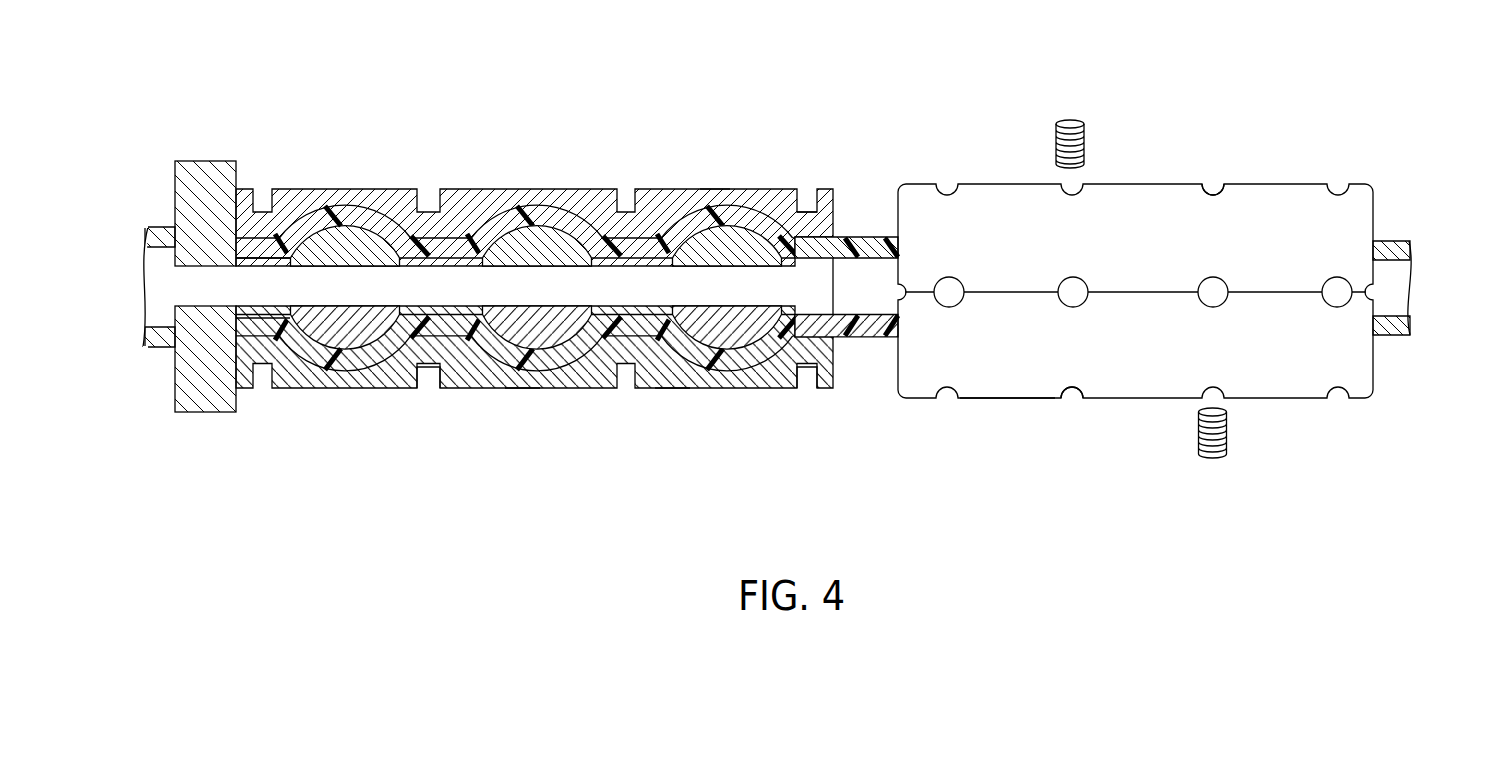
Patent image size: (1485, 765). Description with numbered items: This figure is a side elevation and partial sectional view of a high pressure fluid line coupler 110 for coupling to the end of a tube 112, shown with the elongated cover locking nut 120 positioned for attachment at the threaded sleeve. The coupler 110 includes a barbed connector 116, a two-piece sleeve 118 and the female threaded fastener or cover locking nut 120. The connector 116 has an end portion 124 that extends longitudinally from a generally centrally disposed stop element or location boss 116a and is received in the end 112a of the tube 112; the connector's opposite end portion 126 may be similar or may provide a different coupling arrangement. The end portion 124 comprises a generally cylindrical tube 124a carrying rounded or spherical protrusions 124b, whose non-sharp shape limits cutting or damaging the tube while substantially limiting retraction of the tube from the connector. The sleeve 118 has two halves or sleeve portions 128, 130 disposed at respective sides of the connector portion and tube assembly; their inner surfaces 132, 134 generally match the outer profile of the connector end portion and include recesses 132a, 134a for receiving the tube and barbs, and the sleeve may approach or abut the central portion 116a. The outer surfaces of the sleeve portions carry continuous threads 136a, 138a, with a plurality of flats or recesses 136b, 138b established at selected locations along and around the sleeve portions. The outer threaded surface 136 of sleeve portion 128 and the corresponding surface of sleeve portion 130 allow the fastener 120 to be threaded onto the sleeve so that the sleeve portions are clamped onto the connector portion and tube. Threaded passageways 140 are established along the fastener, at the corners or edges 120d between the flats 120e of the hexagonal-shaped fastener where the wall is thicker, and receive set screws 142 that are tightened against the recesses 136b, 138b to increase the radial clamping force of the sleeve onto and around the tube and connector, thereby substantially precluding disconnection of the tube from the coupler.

The high pressure fluid line coupler 110 is at (794, 78).
The tube 112 is at (852, 237).
The tube end 112a is at (258, 330).
The connector 116 is at (204, 176).
The location boss 116a is at (205, 405).
The sleeve 118 is at (468, 138).
The cover locking nut 120 is at (1150, 398).
The edges 120d is at (1133, 296).
The flats 120e is at (997, 398).
The end portion 124 is at (358, 329).
The cylindrical tube 124a is at (410, 335).
The protrusions 124b is at (585, 388).
The opposite end portion 126 is at (157, 345).
The sleeve portion 128 is at (717, 183).
The sleeve portion 130 is at (716, 408).
The inner surface 132 is at (657, 200).
The recess 132a is at (540, 189).
The inner surface 134 is at (673, 388).
The recess 134a is at (520, 388).
The outer surface 136 is at (760, 189).
The threads 136a is at (325, 189).
The recesses 136b is at (810, 205).
The threads 138a is at (465, 395).
The recesses 138b is at (805, 392).
The threaded passageways 140 is at (1216, 184).
The set screws 142 is at (1102, 139).